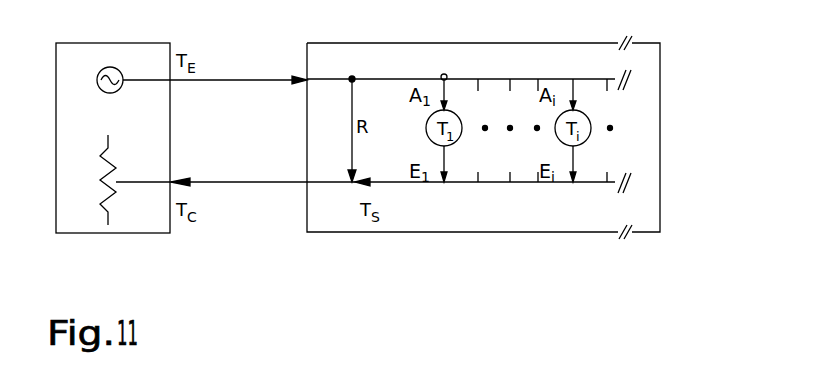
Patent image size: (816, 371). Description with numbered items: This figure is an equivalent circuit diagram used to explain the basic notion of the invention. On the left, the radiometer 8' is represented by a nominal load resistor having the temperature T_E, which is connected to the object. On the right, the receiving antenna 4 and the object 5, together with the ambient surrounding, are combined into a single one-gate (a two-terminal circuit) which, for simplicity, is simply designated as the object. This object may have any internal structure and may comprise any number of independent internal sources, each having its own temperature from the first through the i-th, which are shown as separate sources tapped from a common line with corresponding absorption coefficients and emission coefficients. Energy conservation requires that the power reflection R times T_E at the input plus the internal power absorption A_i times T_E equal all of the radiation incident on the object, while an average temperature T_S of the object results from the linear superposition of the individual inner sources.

The radiometer 8' is at (111, 51).
The receiving antenna 4 is at (392, 56).
The object 5 is at (469, 131).